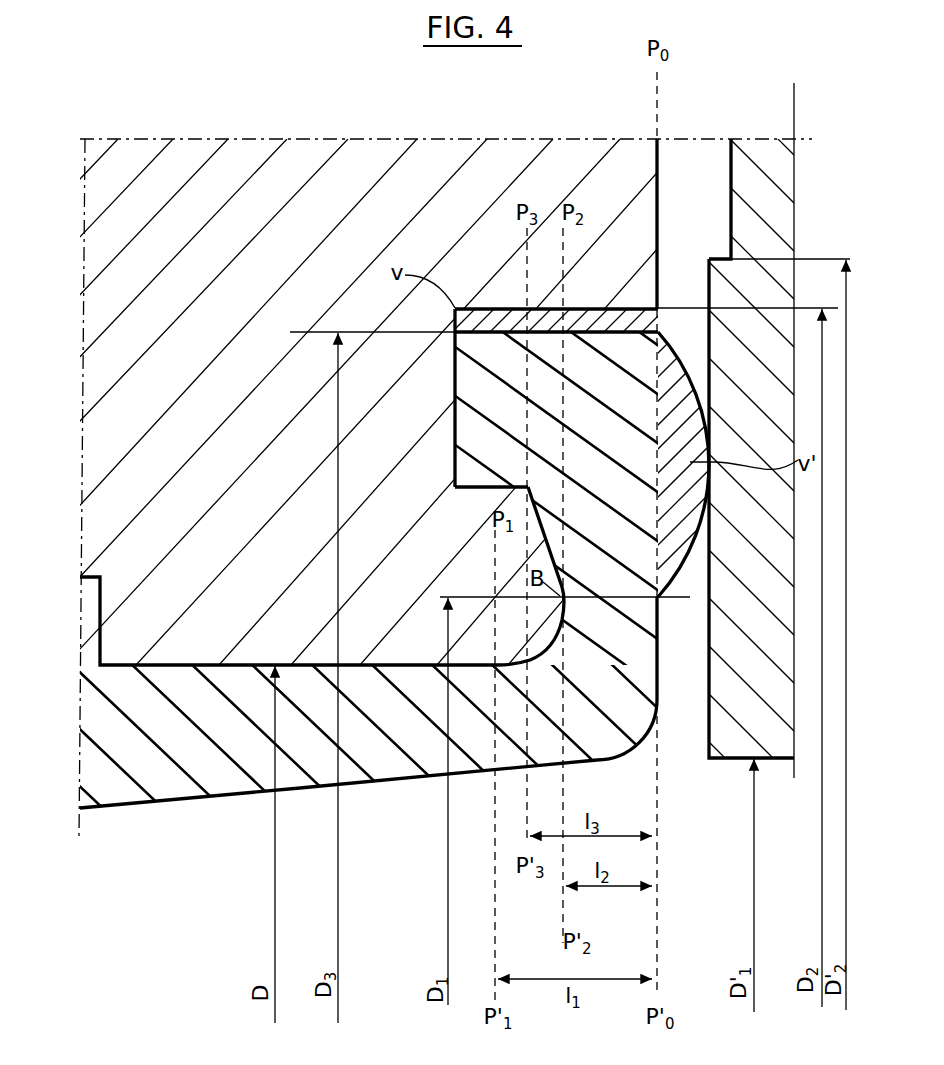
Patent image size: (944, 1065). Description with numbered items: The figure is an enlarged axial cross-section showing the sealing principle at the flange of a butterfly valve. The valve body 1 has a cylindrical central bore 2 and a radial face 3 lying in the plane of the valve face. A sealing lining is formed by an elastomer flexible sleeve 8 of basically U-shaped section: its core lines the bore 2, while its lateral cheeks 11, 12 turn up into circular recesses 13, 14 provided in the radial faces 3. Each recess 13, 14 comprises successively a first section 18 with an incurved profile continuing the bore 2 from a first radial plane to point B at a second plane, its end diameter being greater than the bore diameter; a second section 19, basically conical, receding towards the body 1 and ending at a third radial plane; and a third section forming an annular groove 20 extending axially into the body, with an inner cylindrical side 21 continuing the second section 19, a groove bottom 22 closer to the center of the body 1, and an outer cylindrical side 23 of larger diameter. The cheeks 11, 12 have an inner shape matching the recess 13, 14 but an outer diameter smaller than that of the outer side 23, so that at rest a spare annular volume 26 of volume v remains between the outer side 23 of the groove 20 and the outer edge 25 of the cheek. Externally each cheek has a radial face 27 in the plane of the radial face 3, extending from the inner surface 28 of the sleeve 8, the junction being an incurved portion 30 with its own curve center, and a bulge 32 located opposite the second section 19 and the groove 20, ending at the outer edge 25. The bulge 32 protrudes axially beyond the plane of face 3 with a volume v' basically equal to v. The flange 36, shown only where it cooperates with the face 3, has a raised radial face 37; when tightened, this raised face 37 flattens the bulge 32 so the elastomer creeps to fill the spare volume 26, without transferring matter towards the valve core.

The body 1 is at (315, 160).
The cylindrical central bore 2 is at (415, 727).
The radial face 3 is at (657, 158).
The elastomer flexible ring or sleeve 8 is at (195, 801).
The lateral cheek 11 is at (683, 372).
The lateral cheek 12 is at (677, 330).
The circular recess 13 is at (654, 465).
The circular recess 14 is at (600, 437).
The first section 18 is at (548, 648).
The second section 19 is at (560, 556).
The annular groove 20 is at (542, 418).
The inner cylindrical side 21 is at (467, 482).
The groove bottom 22 is at (465, 375).
The outer cylindrical side 23 is at (597, 310).
The outer edge 25 is at (483, 308).
The spare annular volume 26 is at (545, 315).
The radial face 27 is at (658, 672).
The inner surface 28 is at (410, 775).
The incurved profile portion 30 is at (632, 747).
The bulge 32 is at (697, 550).
The flange 36 is at (765, 170).
The raised radial face 37 is at (708, 267).